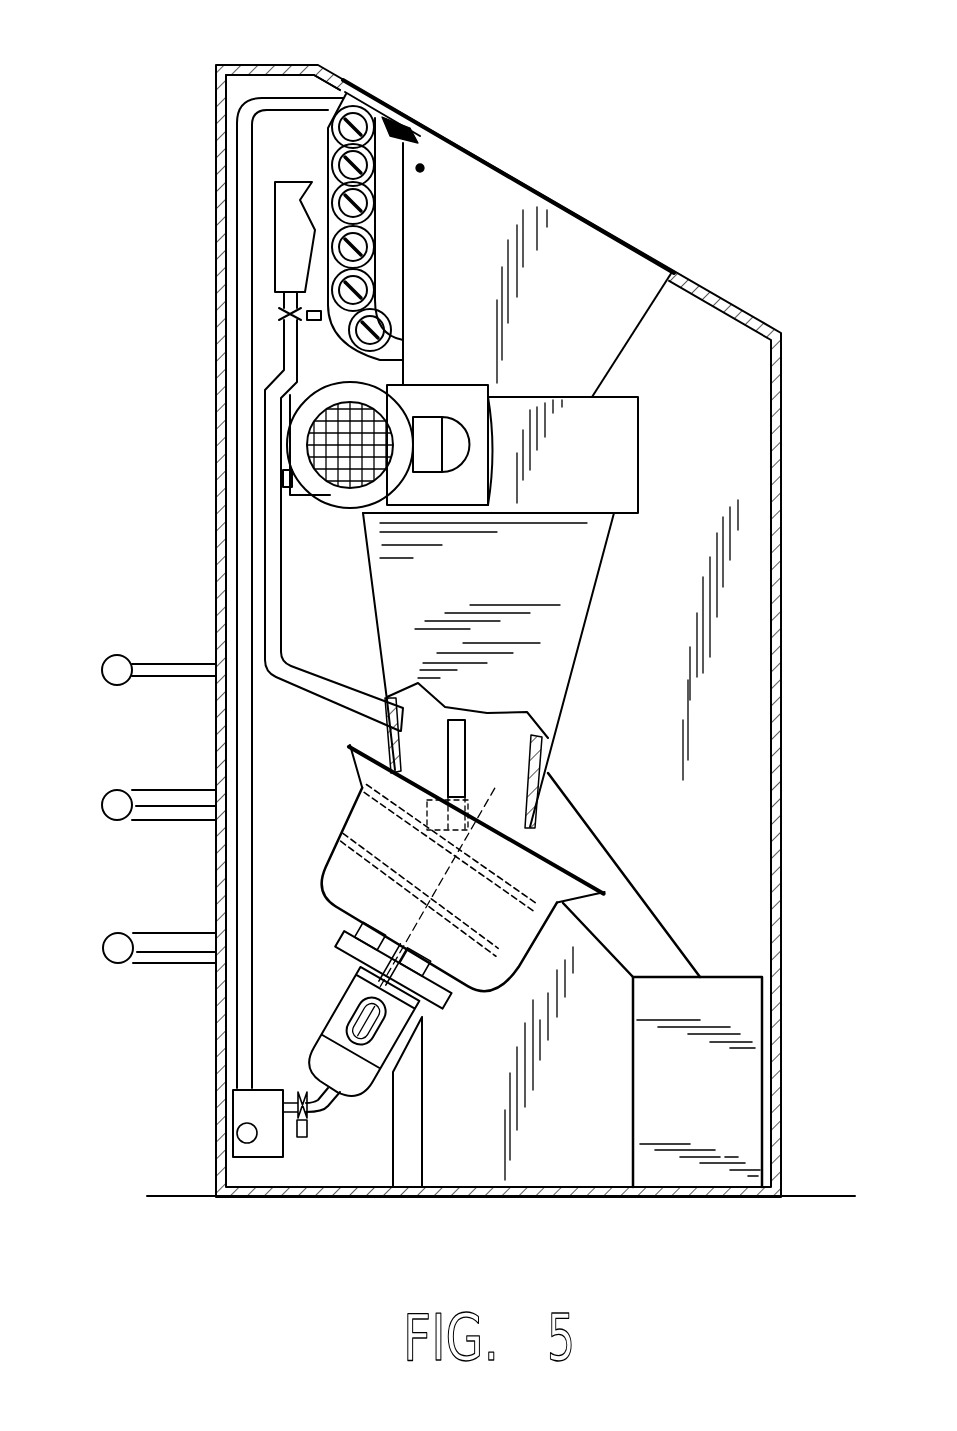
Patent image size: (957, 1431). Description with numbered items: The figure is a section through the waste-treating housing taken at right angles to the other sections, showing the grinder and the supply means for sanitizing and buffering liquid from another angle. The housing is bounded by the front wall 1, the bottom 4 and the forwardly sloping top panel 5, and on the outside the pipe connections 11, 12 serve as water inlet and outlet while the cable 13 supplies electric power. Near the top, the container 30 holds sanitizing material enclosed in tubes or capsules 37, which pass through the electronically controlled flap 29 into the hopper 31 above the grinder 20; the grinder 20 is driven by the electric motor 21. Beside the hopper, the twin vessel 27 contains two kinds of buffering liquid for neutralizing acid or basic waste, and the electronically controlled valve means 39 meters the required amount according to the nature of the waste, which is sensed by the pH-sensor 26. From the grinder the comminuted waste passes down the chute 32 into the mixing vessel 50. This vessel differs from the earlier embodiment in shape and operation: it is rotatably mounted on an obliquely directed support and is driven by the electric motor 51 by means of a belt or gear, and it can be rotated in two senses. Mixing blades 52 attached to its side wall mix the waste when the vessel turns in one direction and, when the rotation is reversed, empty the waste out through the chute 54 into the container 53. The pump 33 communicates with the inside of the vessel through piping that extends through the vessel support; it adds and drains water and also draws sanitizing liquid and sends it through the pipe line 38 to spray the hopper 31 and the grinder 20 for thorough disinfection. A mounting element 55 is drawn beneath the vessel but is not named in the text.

The front wall 1 is at (783, 930).
The bottom 4 is at (500, 1200).
The top panel 5 is at (270, 65).
The pipe connection 11 is at (108, 955).
The pipe connection 12 is at (108, 813).
The cable 13 is at (110, 672).
The grinder 20 is at (625, 438).
The electric motor 21 is at (348, 475).
The pH-sensor 26 is at (460, 770).
The twin vessel 27 is at (280, 200).
The flap 29 is at (380, 358).
The container 30 is at (374, 233).
The hopper 31 is at (563, 227).
The chute 32 is at (580, 572).
The pump 33 is at (265, 1150).
The tubes or capsules 37 is at (420, 168).
The pipe line 38 is at (245, 573).
The valve means 39 is at (280, 313).
The mixing vessel 50 is at (449, 868).
The electric motor 51 is at (359, 1036).
The mixing blades 52 is at (435, 873).
The container 53 is at (750, 1130).
The chute 54 is at (660, 935).
The mounting plate 55 is at (395, 965).